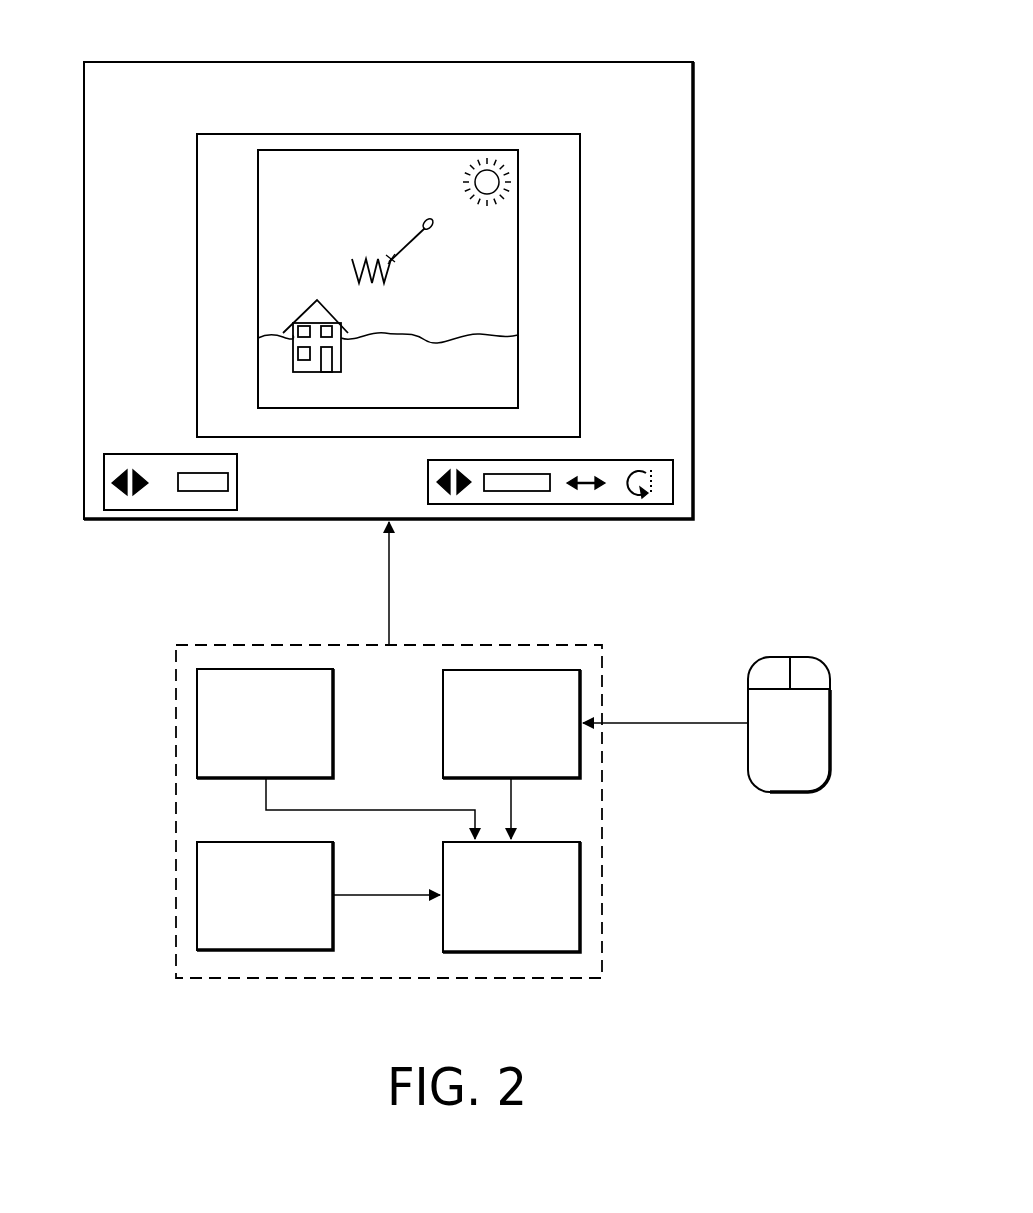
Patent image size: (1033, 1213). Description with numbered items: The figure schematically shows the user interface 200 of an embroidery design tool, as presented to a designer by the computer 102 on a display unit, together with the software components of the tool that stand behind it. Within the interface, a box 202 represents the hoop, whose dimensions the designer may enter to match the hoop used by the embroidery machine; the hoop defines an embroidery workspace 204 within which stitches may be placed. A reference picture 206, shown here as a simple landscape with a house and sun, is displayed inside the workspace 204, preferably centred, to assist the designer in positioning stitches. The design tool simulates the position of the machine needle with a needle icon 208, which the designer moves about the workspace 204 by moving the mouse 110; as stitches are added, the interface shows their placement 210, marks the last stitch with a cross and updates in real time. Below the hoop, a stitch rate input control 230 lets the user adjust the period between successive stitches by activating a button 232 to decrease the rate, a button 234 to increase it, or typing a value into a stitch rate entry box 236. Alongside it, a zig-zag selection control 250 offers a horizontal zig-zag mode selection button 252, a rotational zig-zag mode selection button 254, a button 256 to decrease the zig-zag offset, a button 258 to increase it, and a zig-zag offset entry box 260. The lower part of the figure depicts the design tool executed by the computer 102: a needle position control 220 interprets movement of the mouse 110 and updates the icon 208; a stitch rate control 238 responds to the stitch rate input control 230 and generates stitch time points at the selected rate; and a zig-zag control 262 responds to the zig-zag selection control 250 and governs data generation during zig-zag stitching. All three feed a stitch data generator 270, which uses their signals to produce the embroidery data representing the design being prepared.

The user interface 200 is at (694, 61).
The box 202 is at (581, 397).
The embroidery workspace 204 is at (560, 281).
The reference picture 206 is at (317, 149).
The needle icon/pointer 208 is at (413, 236).
The stitch placement 210 is at (351, 266).
The stitch rate input control 230 is at (177, 454).
The button 232 is at (116, 494).
The button 234 is at (140, 494).
The stitch rate entry box 236 is at (226, 492).
The zig-zag selection control 250 is at (609, 460).
The horizontal zig-zag mode selection button 252 is at (584, 490).
The rotational zig-zag mode selection button 254 is at (645, 496).
The button 256 is at (436, 482).
The button 258 is at (461, 494).
The zig-zag offset entry box 260 is at (516, 492).
The computer 102 is at (176, 940).
The stitch rate control 238 is at (197, 678).
The zig-zag control 262 is at (197, 854).
The needle position control 220 is at (580, 679).
The stitch data generator 270 is at (580, 856).
The mouse 110 is at (822, 661).